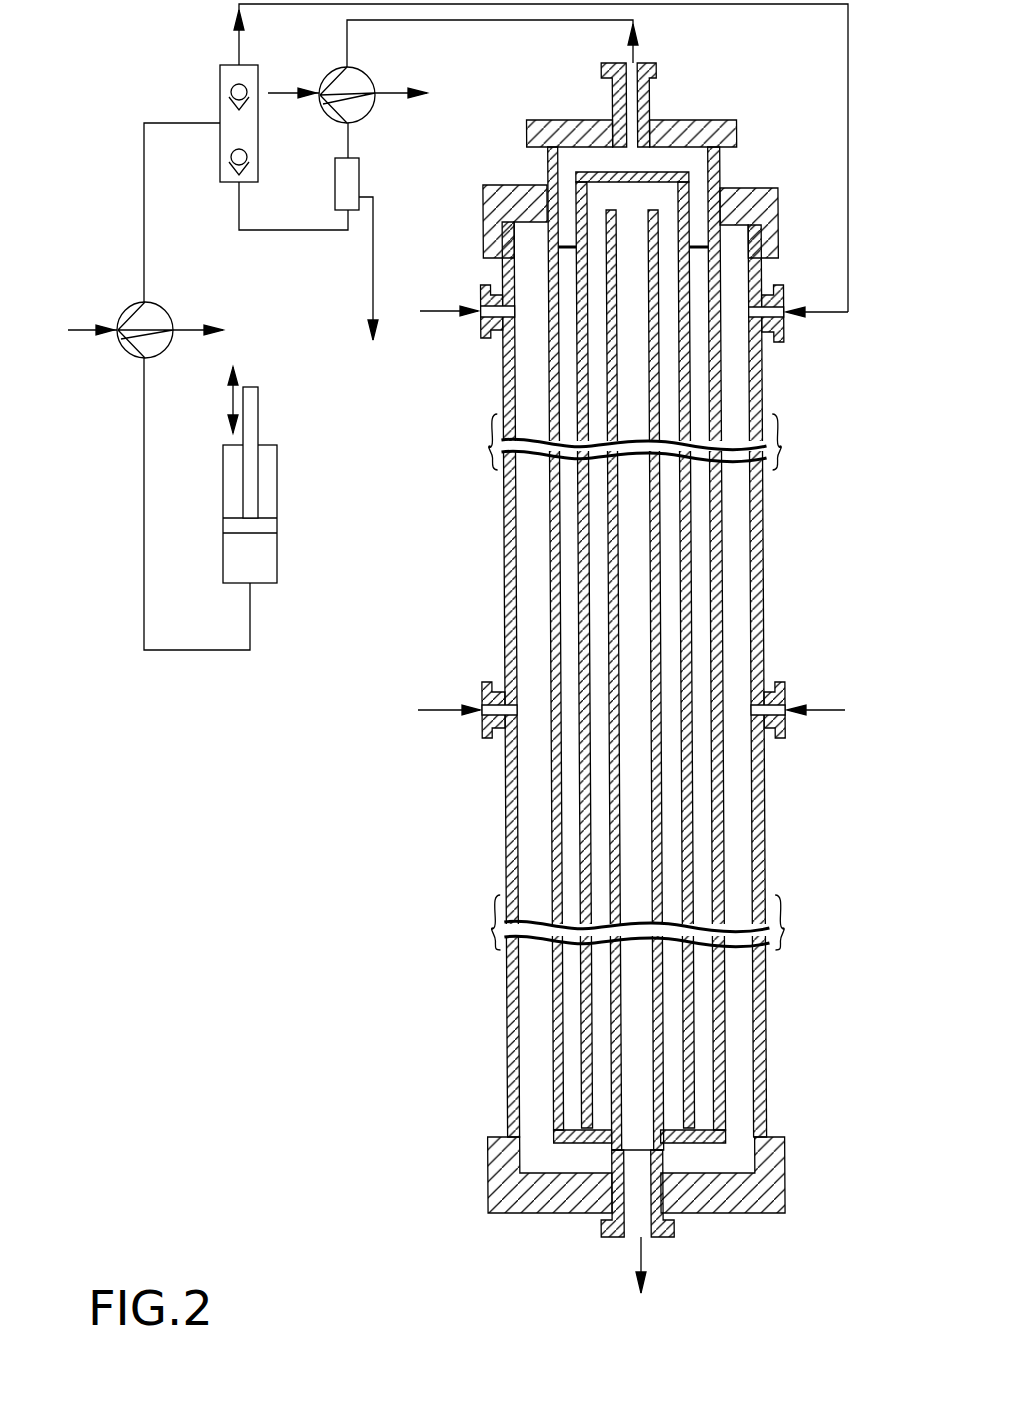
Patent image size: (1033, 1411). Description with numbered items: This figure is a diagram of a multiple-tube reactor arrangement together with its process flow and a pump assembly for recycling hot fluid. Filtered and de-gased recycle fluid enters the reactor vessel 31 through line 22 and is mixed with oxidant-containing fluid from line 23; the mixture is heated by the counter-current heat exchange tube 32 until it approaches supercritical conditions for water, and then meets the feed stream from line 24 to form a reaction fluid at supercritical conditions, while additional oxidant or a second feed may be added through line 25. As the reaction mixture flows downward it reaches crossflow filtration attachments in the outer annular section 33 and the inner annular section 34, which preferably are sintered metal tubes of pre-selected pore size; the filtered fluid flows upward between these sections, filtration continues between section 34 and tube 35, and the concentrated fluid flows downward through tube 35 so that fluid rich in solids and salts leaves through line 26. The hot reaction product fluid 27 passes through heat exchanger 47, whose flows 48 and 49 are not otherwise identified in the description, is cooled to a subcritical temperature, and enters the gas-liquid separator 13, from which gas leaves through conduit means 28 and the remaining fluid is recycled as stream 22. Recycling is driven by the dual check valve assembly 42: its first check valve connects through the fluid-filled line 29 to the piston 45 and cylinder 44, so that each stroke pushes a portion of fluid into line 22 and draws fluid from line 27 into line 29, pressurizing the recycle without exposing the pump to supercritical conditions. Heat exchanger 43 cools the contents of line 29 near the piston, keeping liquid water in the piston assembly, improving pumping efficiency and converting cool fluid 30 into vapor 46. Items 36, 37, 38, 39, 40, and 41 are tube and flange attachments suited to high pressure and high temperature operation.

The gas-liquid separator 13 is at (359, 170).
The recycle fluid line 22 is at (828, 314).
The oxidant-containing fluid line 23 is at (436, 312).
The feed stream line 24 is at (434, 712).
The second feed or additional oxidant line 25 is at (828, 712).
The concentrated reaction fluid outlet line 26 is at (645, 1252).
The hot reaction product fluid line 27 is at (637, 58).
The gas conduit means 28 is at (373, 287).
The fluid-filled line 29 is at (144, 192).
The cool fluid 30 is at (80, 328).
The reactor vessel 31 is at (503, 822).
The counter-current heat exchange tube 32 is at (550, 847).
The outer annular section crossflow filtration attachment 33 is at (552, 1043).
The inner annular section crossflow filtration attachment 34 is at (590, 226).
The inner tube 35 is at (616, 322).
The tube and flange attachment 36 is at (606, 1238).
The tube and flange attachment 37 is at (745, 1214).
The tube and flange attachment 38 is at (722, 176).
The tube and flange attachment 39 is at (502, 186).
The tube and flange attachment 40 is at (547, 120).
The tube and flange attachment 41 is at (652, 100).
The dual check valve assembly 42 is at (220, 110).
The heat exchanger 43 is at (130, 356).
The cylinder 44 is at (277, 556).
The piston 45 is at (258, 430).
The vapor 46 is at (192, 328).
The heat exchanger 47 is at (370, 113).
The inlet arrow 48 is at (268, 90).
The outlet arrow 49 is at (395, 92).